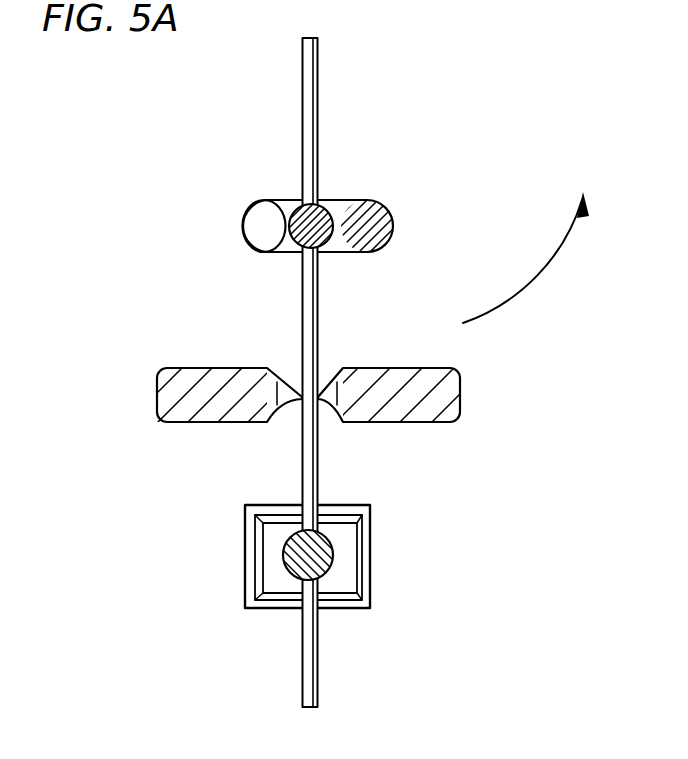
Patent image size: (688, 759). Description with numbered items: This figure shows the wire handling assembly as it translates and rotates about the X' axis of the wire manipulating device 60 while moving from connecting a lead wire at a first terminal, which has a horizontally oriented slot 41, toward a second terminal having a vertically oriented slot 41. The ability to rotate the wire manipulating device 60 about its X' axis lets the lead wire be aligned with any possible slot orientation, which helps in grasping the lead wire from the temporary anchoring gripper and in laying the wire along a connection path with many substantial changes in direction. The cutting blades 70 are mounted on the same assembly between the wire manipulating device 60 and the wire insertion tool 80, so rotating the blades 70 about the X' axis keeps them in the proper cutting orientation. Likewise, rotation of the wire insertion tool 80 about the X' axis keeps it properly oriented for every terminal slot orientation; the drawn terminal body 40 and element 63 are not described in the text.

The frame housing 40 is at (357, 612).
The slot 41 is at (302, 613).
The wire manipulating device 60 is at (258, 213).
The pivot roller 63 is at (333, 252).
The cutting blades 70 is at (455, 422).
The wire insertion tool 80 is at (325, 556).